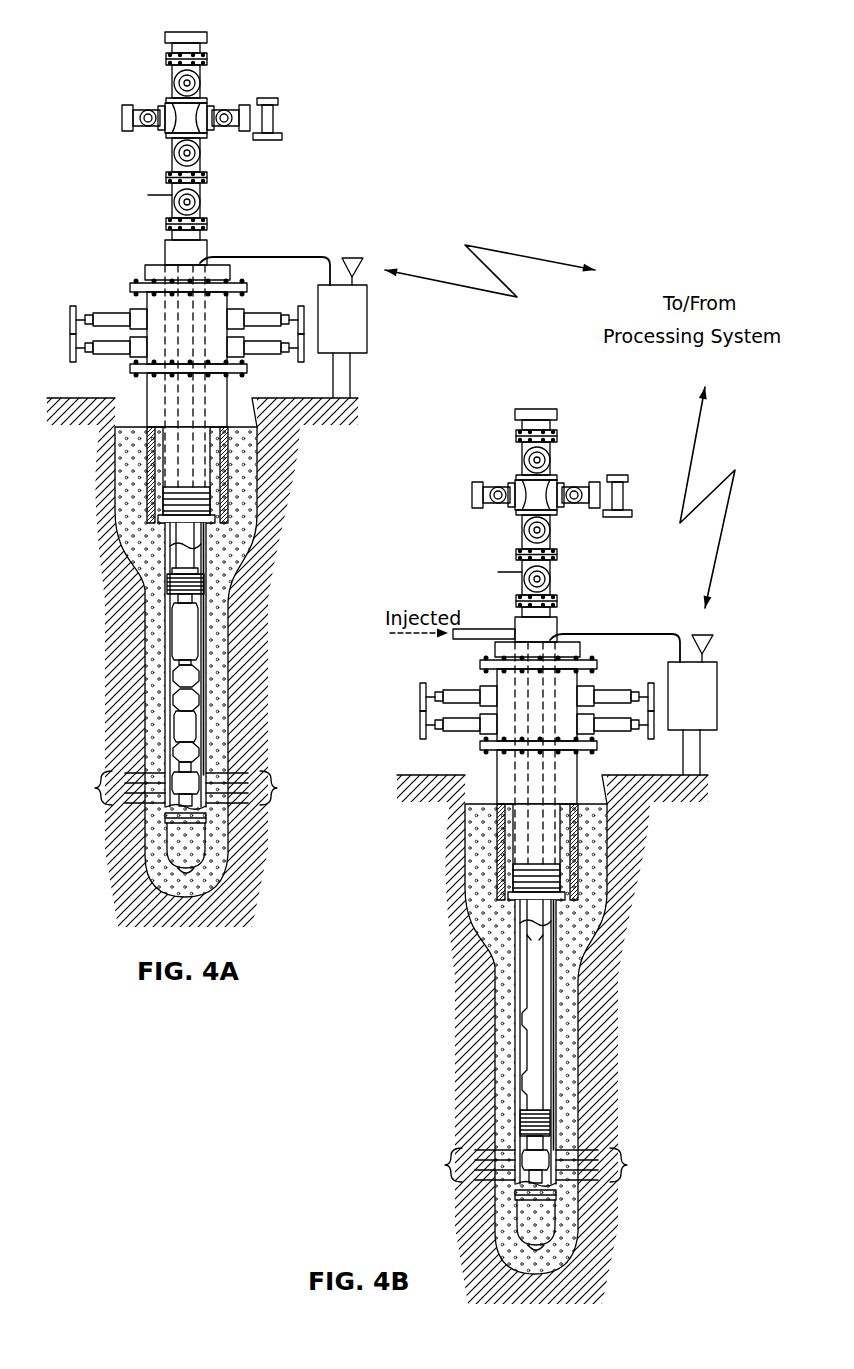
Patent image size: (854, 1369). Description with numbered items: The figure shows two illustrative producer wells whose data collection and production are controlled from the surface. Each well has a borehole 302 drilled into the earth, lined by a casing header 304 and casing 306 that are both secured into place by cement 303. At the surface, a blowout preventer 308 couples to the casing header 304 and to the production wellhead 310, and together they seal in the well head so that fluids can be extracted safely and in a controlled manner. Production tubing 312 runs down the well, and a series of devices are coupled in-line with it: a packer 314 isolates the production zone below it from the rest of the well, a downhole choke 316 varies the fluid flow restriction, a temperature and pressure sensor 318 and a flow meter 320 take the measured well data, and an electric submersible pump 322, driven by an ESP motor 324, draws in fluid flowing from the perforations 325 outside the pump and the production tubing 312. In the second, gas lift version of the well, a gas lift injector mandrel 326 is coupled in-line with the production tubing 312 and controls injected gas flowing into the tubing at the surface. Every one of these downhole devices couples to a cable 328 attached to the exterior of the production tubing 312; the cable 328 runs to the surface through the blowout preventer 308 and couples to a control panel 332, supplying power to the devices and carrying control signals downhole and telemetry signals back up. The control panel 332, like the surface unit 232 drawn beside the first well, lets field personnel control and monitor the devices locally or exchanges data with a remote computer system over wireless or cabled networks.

In FIG. 4A, the surface data acquisition unit 232 is at (350, 340).
In FIG. 4A, the borehole 302 is at (113, 437).
In FIG. 4B, the borehole 302 is at (463, 814).
In FIG. 4A, the cement 303 is at (142, 537).
In FIG. 4B, the cement 303 is at (490, 913).
In FIG. 4A, the casing header 304 is at (150, 462).
In FIG. 4B, the casing header 304 is at (498, 839).
In FIG. 4A, the casing 306 is at (166, 659).
In FIG. 4B, the casing 306 is at (519, 1035).
In FIG. 4A, the blowout preventer 308 is at (145, 310).
In FIG. 4B, the blowout preventer 308 is at (495, 687).
In FIG. 4A, the production wellhead 310 is at (165, 132).
In FIG. 4B, the production wellhead 310 is at (515, 510).
In FIG. 4A, the production tubing 312 is at (179, 560).
In FIG. 4B, the production tubing 312 is at (528, 936).
In FIG. 4A, the packer 314 is at (170, 595).
In FIG. 4B, the packer 314 is at (528, 1119).
In FIG. 4A, the downhole choke 316 is at (181, 625).
In FIG. 4A, the temperature and pressure sensor 318 is at (176, 683).
In FIG. 4A, the flow meter 320 is at (180, 716).
In FIG. 4A, the electric submersible pump 322 is at (179, 736).
In FIG. 4A, the ESP motor 324 is at (185, 787).
In FIG. 4A, the perforations 325 is at (185, 788).
In FIG. 4B, the perforations 325 is at (532, 1165).
In FIG. 4B, the gas lift injector mandrel 326 is at (525, 985).
In FIG. 4A, the cable 328 is at (285, 254).
In FIG. 4B, the cable 328 is at (633, 632).
In FIG. 4B, the control panel 332 is at (700, 717).